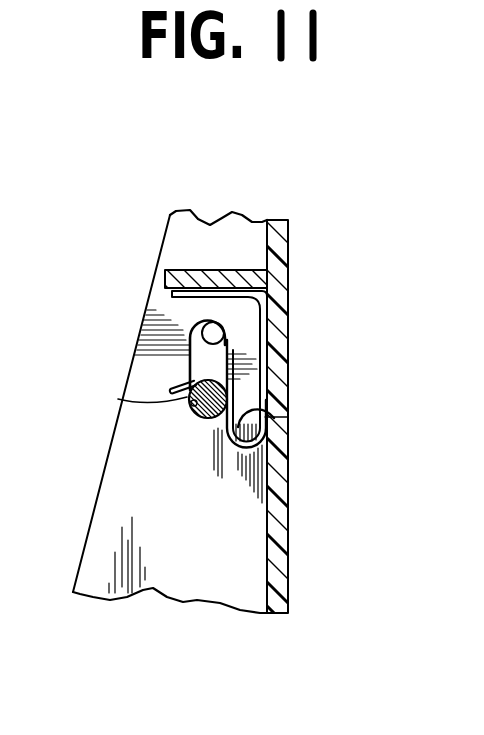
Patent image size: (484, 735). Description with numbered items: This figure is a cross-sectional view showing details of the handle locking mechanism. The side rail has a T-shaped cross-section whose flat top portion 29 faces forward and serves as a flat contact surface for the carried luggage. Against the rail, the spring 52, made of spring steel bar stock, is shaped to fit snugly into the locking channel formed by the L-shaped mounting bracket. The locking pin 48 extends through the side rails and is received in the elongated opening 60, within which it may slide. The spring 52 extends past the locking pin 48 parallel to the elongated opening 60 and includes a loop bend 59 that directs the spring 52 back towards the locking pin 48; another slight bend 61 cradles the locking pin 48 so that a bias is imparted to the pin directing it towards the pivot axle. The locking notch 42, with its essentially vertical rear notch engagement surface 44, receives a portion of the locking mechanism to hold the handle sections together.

The flat top portion 29 is at (280, 550).
The locking notch 42 is at (274, 418).
The rear notch engagement surface 44 is at (185, 385).
The locking pin 48 is at (200, 421).
The spring 52 is at (262, 394).
The loop bend 59 is at (242, 450).
The elongated opening 60 is at (210, 344).
The slight bend 61 is at (190, 372).